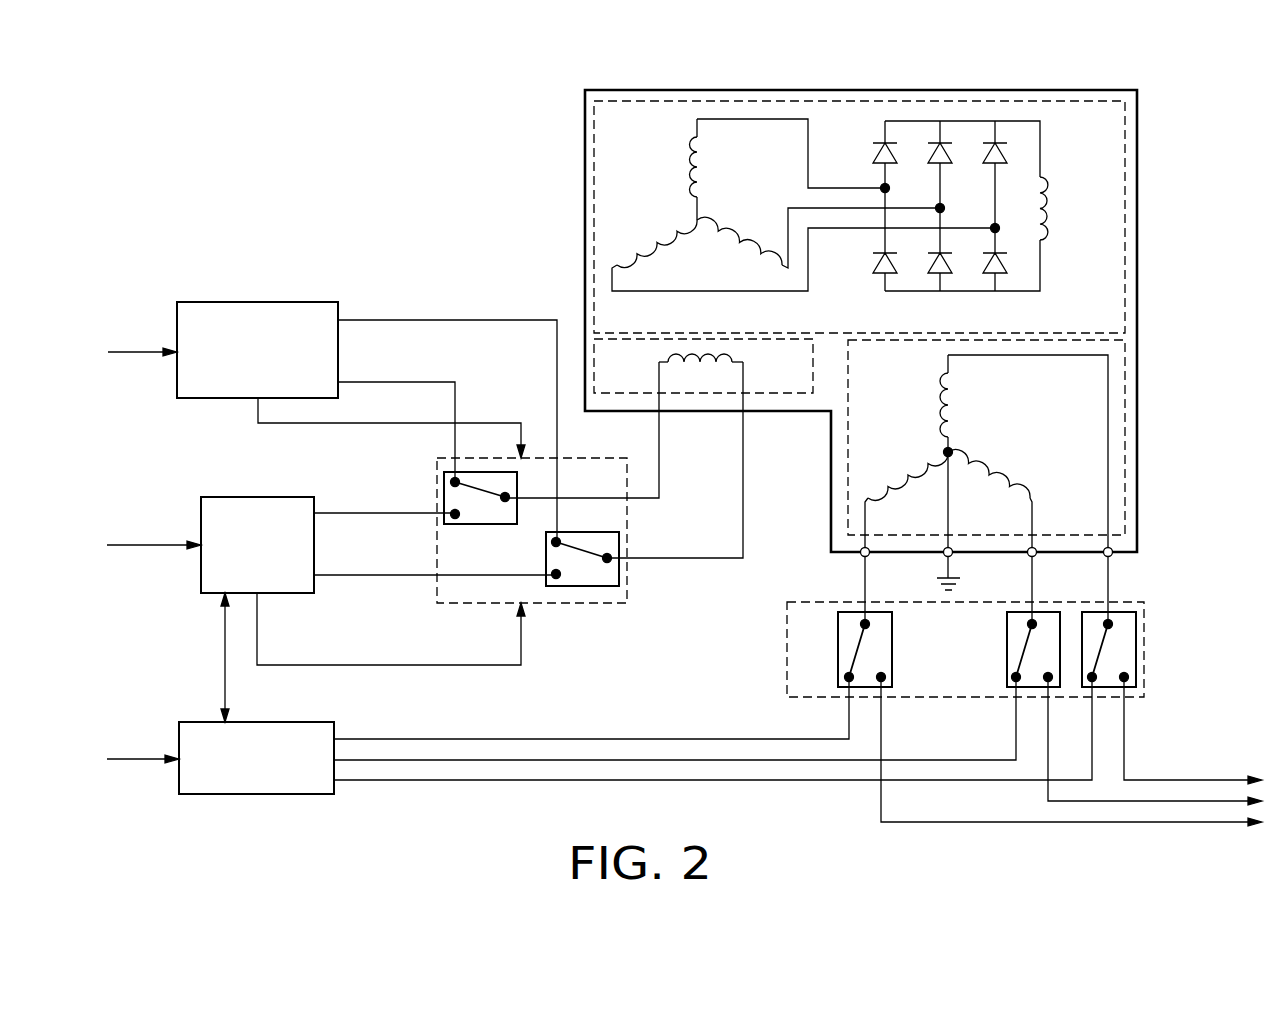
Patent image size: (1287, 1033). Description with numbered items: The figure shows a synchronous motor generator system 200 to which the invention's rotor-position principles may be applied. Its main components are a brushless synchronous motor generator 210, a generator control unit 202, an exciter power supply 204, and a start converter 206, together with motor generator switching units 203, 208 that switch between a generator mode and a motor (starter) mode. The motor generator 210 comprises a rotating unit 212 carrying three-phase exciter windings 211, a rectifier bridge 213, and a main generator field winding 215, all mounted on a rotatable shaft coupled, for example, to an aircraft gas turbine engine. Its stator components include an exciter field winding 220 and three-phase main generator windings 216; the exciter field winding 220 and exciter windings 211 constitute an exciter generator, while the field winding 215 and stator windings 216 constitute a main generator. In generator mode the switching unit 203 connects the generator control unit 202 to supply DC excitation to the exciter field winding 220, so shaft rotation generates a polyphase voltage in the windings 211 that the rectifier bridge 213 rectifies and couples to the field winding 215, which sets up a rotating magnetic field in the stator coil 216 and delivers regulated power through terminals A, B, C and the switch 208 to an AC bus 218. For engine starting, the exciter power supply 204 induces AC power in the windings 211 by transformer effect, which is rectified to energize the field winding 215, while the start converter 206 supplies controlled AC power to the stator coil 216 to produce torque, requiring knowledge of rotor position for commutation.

The synchronous motor generator system 200 is at (461, 195).
The generator control unit 202 is at (293, 302).
The motor generator switching unit 203 is at (574, 603).
The exciter power supply 204 is at (265, 497).
The start converter 206 is at (277, 794).
The motor generator switching unit 208 is at (1144, 632).
The brushless synchronous motor generator 210 is at (1137, 335).
The three-phase exciter windings 211 is at (637, 198).
The rotating unit 212 is at (1127, 192).
The rectifier bridge 213 is at (960, 135).
The main generator field winding 215 is at (1040, 182).
The three-phase main generator windings 216 is at (985, 435).
The AC bus 218 is at (1170, 835).
The exciter field winding 220 is at (741, 353).